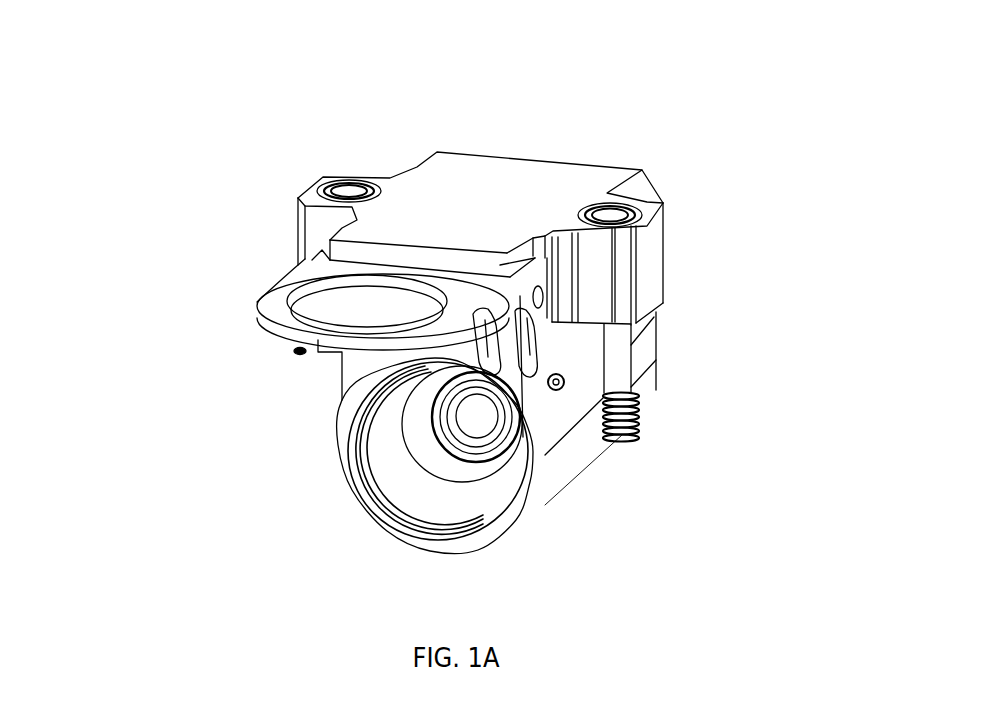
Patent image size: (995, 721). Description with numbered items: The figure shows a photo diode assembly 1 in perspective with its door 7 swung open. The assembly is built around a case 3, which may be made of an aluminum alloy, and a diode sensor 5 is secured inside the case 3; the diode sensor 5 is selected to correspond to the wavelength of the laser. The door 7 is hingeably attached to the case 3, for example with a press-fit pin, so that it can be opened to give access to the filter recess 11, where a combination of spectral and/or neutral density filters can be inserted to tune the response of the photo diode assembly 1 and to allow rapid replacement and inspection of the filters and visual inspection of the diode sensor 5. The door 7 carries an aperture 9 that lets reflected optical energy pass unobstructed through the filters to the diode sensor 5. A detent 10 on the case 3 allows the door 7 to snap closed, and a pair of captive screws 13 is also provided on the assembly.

The photo diode assembly 1 is at (250, 165).
The case 3 is at (547, 177).
The diode sensor 5 is at (475, 400).
The door 7 is at (263, 301).
The aperture 9 is at (556, 377).
The detent 10 is at (397, 303).
The filter recess 11 is at (380, 489).
The captive screws 13 is at (630, 346).